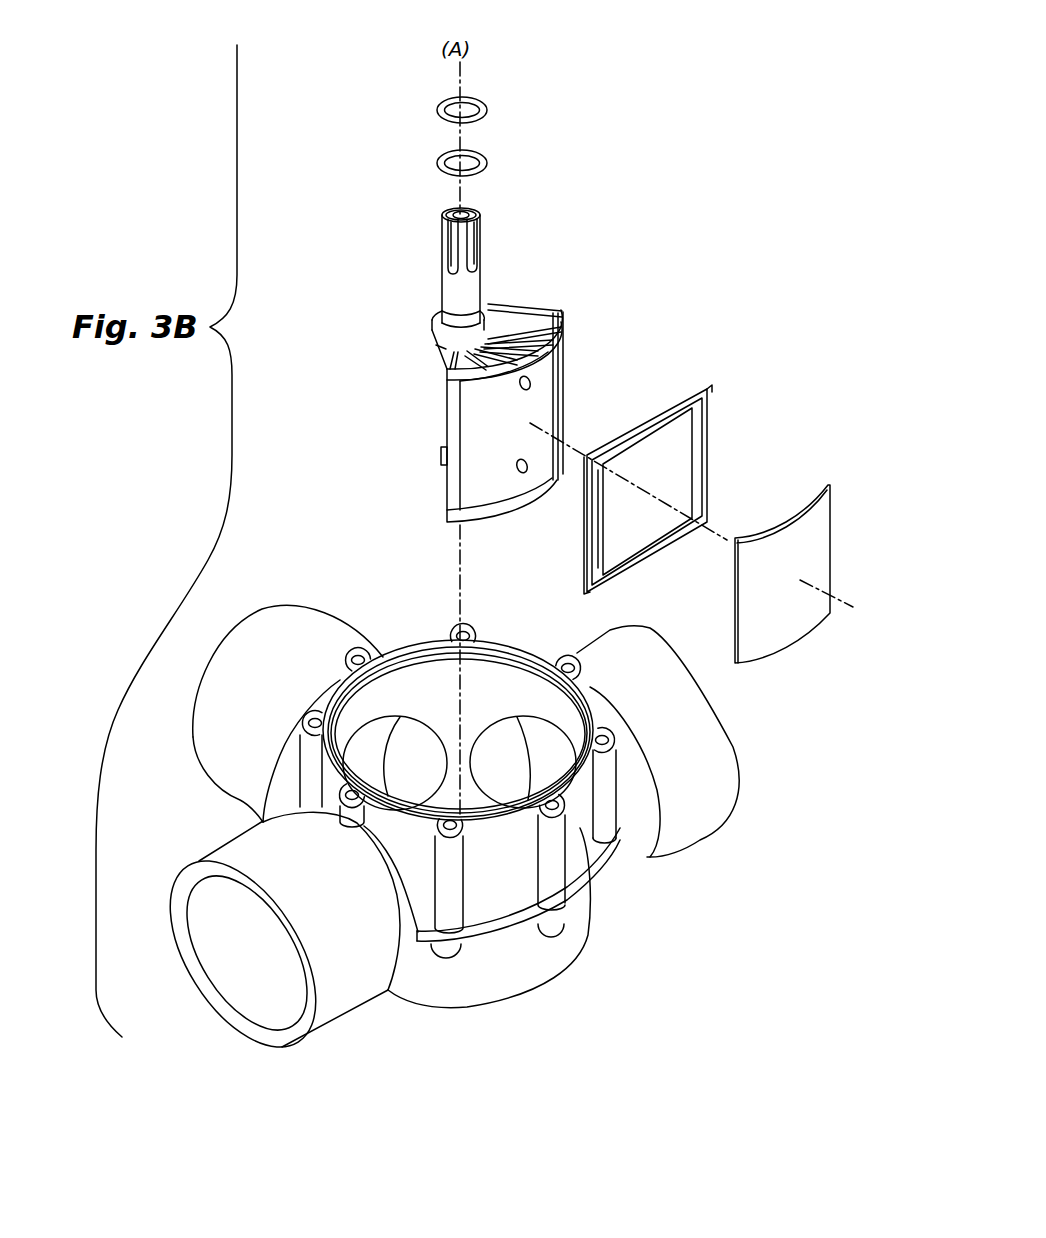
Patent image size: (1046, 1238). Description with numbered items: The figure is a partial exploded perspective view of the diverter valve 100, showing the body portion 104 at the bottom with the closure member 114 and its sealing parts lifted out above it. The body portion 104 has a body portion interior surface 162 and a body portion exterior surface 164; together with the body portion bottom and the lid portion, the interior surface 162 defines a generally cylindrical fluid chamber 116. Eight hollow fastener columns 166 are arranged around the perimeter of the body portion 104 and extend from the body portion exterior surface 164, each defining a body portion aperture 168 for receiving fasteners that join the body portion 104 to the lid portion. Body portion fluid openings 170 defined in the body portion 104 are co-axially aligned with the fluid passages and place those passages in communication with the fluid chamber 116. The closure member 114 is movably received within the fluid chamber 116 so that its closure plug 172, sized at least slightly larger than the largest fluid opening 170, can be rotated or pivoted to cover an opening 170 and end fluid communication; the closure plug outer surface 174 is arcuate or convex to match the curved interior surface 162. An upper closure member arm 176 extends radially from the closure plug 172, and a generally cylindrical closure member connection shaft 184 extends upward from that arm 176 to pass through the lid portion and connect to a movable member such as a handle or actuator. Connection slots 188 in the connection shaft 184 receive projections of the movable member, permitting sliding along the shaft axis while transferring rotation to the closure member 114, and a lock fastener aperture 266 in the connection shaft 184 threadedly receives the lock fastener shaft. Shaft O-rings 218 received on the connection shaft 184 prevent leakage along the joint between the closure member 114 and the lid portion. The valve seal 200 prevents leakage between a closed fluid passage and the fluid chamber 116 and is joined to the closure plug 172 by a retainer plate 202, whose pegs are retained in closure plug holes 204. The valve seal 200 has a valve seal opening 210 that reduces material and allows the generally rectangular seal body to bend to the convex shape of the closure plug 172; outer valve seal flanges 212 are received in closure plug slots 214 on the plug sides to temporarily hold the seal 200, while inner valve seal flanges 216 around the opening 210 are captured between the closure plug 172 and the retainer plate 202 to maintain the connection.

The diverter valve 100 is at (685, 230).
The body portion 104 is at (533, 972).
The closure member 114 is at (487, 265).
The fluid chamber 116 is at (440, 680).
The body portion interior surface 162 is at (490, 680).
The body portion exterior surface 164 is at (580, 830).
The fastener columns 166 is at (553, 857).
The body portion apertures 168 is at (313, 720).
The body portion fluid openings 170 is at (373, 740).
The closure plug 172 is at (563, 360).
The closure plug outer surface 174 is at (472, 417).
The upper closure member arm 176 is at (513, 313).
The closure member connection shaft 184 is at (478, 153).
The connection slots 188 is at (480, 230).
The valve seal 200 is at (692, 388).
The retainer plate 202 is at (760, 622).
The closure plug holes 204 is at (560, 337).
The valve seal opening 210 is at (683, 473).
The outer valve seal flanges 212 is at (587, 557).
The closure plug slots 214 is at (543, 415).
The inner valve seal flanges 216 is at (683, 440).
The shaft O-rings 218 is at (472, 100).
The lock fastener aperture 266 is at (447, 207).